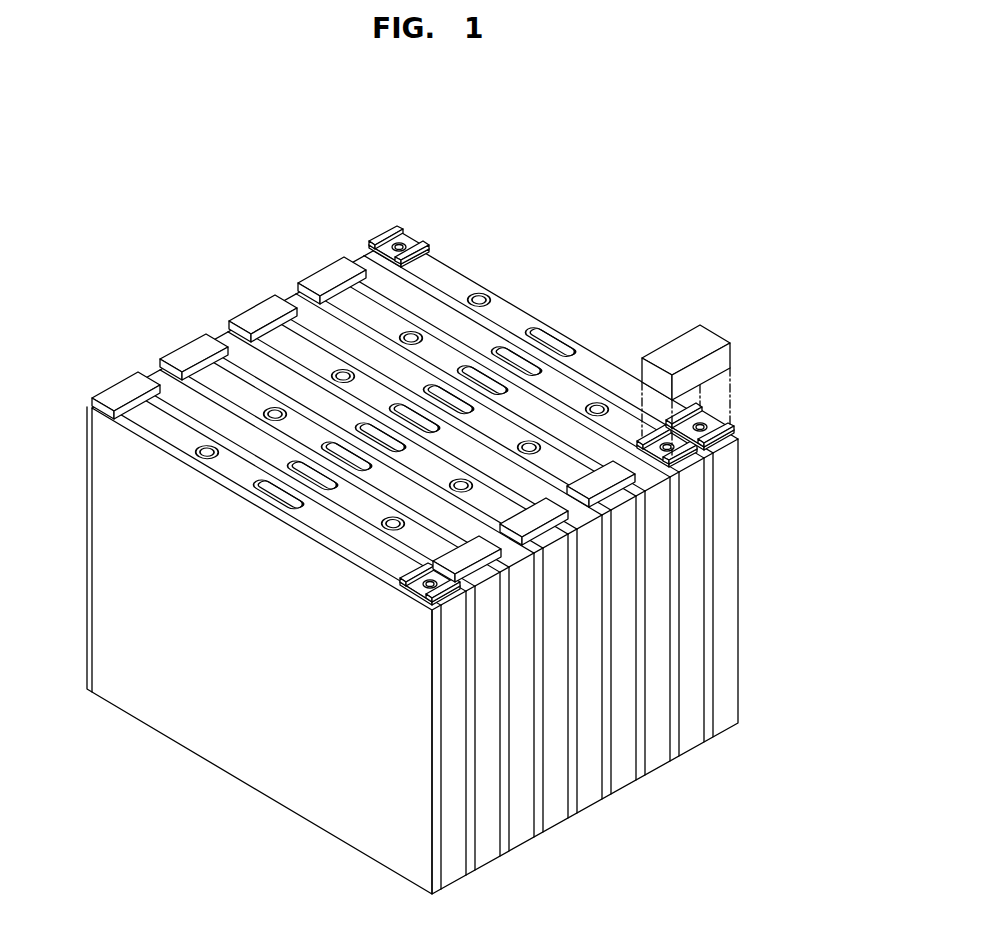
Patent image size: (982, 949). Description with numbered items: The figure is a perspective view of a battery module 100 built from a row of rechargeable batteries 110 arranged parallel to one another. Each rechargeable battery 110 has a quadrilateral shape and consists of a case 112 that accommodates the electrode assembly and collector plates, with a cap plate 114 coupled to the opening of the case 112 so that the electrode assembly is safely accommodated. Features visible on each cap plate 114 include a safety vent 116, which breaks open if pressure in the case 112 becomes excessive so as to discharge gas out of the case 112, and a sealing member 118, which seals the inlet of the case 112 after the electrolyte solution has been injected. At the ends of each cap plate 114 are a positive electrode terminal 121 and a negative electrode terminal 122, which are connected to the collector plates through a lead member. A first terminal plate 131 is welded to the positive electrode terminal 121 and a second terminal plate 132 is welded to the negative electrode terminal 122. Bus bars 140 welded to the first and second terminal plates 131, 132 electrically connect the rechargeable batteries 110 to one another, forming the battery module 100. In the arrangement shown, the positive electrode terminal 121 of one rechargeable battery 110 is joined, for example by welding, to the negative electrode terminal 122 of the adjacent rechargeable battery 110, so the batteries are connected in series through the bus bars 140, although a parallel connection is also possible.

The battery module 100 is at (220, 229).
The rechargeable battery 110 is at (728, 563).
The case 112 is at (254, 761).
The cap plate 114 is at (597, 373).
The safety vent 116 is at (550, 337).
The sealing member 118 is at (468, 286).
The positive electrode terminal 121 is at (395, 238).
The negative electrode terminal 122 is at (717, 417).
The first terminal plate 131 is at (438, 256).
The second terminal plate 132 is at (740, 434).
The bus bar 140 is at (137, 390).